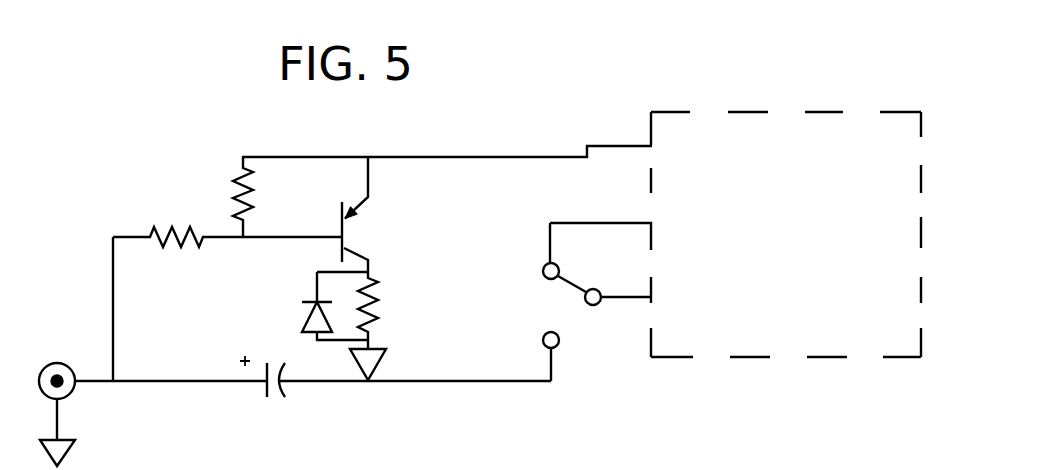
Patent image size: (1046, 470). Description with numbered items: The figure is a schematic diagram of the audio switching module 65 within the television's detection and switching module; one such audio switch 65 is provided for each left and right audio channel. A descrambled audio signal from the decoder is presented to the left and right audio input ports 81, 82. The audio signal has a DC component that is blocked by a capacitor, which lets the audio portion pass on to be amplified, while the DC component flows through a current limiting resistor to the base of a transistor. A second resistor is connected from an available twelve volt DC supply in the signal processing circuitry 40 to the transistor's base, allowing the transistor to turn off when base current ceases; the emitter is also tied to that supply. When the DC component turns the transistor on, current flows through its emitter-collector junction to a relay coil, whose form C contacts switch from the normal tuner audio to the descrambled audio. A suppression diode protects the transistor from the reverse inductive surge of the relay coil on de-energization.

The audio switching module 65 is at (197, 123).
The audio input port (left) 81 is at (103, 414).
The audio input port (right) 82 is at (70, 395).
The signal processing circuitry 40 is at (733, 357).